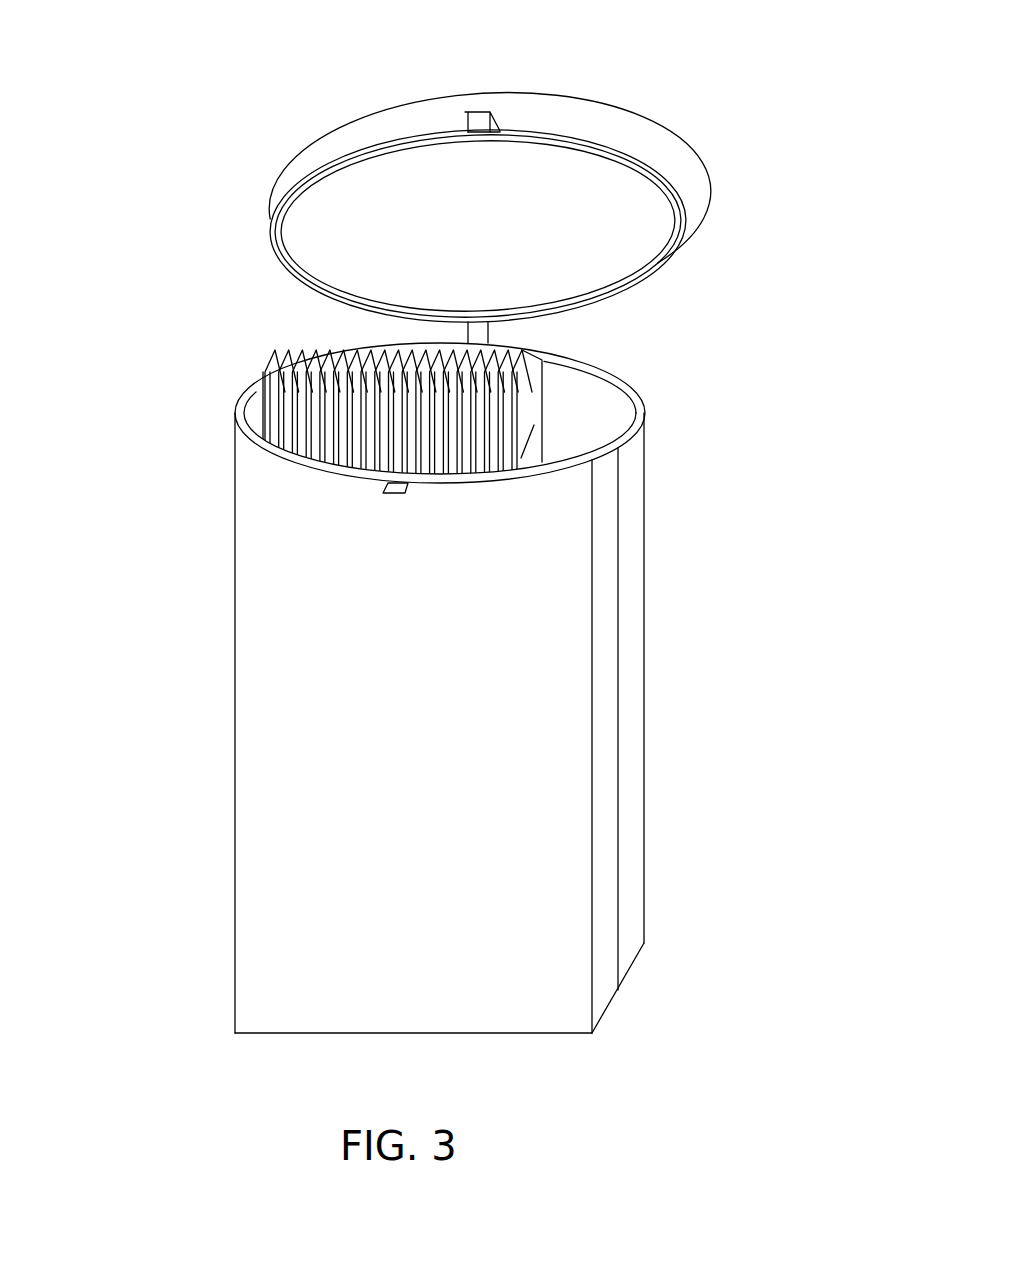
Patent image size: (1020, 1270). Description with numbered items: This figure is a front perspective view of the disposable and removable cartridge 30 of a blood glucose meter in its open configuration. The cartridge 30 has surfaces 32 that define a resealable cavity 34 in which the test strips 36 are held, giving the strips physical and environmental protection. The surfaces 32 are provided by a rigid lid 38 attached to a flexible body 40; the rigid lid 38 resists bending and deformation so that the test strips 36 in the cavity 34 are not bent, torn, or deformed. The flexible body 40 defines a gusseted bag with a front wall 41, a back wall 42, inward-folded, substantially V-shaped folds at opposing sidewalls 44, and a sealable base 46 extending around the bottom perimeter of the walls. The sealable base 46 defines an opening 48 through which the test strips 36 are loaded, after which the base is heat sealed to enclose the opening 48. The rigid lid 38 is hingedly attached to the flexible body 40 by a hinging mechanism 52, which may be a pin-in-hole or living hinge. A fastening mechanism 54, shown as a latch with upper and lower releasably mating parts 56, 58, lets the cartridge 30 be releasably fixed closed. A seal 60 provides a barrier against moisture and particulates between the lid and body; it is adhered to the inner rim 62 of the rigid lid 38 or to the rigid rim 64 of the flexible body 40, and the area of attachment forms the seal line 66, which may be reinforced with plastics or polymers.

The disposable and removable cartridge 30 is at (755, 313).
The surfaces 32 is at (618, 420).
The resealable cavity 34 is at (563, 382).
The test strips 36 is at (270, 356).
The rigid lid 38 is at (698, 176).
The flexible body 40 is at (198, 751).
The front wall 41 is at (238, 878).
The back wall 42 is at (648, 690).
The opposing sidewalls 44 is at (637, 768).
The sealable base 46 is at (607, 1012).
The opening 48 is at (268, 1066).
The hinging mechanism 52 is at (478, 328).
The fastening mechanism 54 is at (469, 106).
The upper releasably mating part 56 is at (480, 114).
The lower releasably mating part 58 is at (395, 497).
The seal 60 is at (573, 145).
The inner rim 62 is at (650, 276).
The rigid rim 64 is at (236, 426).
The seal line 66 is at (283, 200).